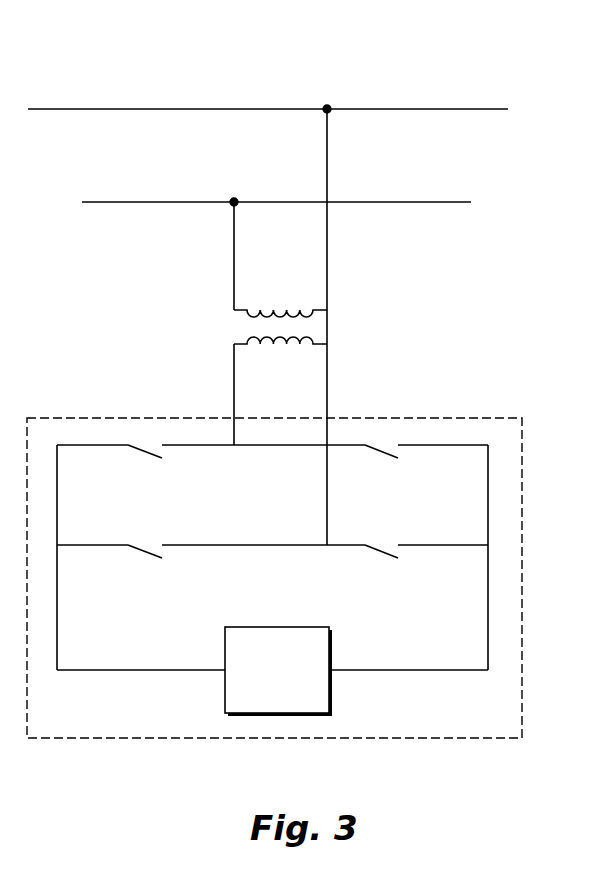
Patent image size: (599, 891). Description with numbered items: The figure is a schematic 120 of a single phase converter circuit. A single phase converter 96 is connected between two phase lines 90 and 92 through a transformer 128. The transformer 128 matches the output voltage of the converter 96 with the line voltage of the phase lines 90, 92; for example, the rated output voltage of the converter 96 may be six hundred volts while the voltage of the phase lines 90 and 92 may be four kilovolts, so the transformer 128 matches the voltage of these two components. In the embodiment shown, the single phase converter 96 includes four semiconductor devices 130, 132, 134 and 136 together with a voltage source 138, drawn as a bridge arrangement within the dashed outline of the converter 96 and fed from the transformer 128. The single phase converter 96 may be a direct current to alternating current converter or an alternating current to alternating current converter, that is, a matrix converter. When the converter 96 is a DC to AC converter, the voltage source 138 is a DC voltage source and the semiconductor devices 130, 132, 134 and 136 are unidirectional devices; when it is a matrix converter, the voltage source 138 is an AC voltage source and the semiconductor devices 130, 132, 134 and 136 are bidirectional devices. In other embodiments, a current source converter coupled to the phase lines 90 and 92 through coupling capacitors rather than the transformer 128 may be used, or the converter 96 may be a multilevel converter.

The schematic 120 is at (107, 36).
The phase line 90 is at (130, 203).
The phase line 92 is at (378, 108).
The transformer 128 is at (226, 334).
The semiconductor device 130 is at (142, 457).
The semiconductor device 132 is at (142, 557).
The semiconductor device 134 is at (380, 457).
The semiconductor device 136 is at (380, 557).
The voltage source 138 is at (225, 628).
The single phase converter 96 is at (522, 580).